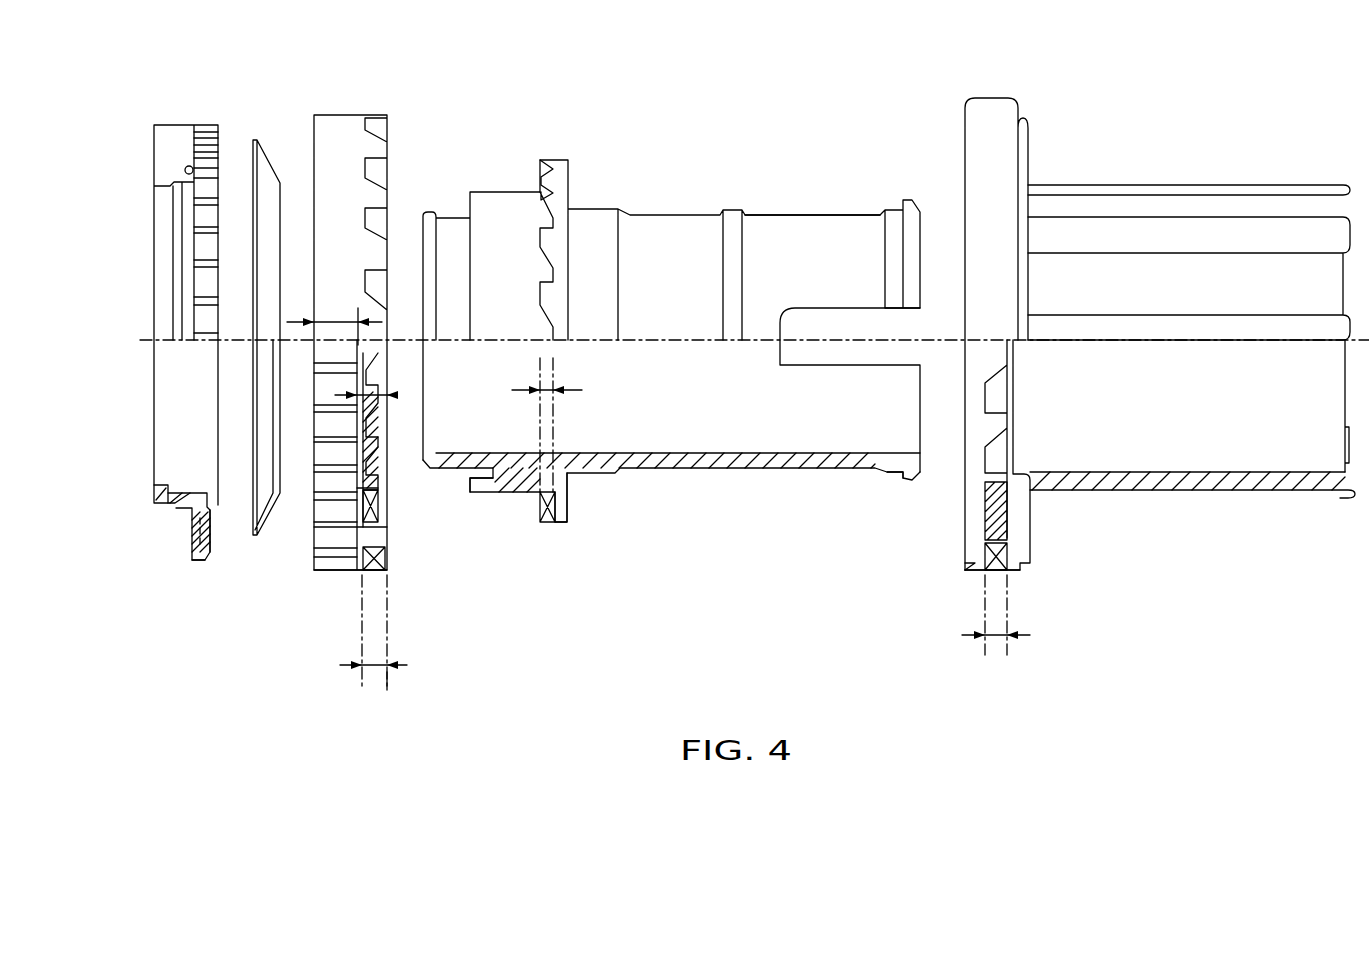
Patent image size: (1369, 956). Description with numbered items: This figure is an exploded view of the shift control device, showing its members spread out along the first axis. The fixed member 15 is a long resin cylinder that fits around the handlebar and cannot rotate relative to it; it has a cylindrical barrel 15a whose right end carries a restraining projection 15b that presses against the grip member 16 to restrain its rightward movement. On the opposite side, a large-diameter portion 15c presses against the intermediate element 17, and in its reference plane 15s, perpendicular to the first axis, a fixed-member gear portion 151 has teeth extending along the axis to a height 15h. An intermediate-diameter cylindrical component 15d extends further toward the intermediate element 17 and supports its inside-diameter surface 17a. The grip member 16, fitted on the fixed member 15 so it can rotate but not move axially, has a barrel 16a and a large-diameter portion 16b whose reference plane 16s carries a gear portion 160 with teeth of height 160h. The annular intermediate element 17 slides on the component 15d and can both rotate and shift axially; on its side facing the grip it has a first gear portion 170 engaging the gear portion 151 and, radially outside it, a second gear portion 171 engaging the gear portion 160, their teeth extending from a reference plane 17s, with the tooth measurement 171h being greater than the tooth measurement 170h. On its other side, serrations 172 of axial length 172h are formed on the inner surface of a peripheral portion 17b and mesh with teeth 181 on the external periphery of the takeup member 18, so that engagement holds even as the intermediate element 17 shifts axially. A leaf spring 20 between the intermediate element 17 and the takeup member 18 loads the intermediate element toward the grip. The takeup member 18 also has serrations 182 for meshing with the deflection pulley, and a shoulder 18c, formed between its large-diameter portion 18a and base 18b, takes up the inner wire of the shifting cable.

The takeup member 18 is at (178, 132).
The large-diameter portion 18a is at (218, 545).
The base 18b is at (165, 484).
The shoulder 18c is at (186, 512).
The teeth 181 is at (200, 560).
The serrations 182 is at (192, 540).
The leaf spring 20 is at (262, 150).
The intermediate element 17 is at (349, 114).
The inside-diameter surface 17a is at (352, 488).
The peripheral portion 17b is at (345, 572).
The reference plane 17s is at (340, 665).
The first gear portion 170 is at (378, 506).
The tooth measurement 170h is at (382, 378).
The second gear portion 171 is at (385, 560).
The tooth measurement 171h is at (388, 672).
The serrations 172 is at (352, 490).
The length of serrations 172h is at (338, 318).
The fixed member 15 is at (697, 213).
The cylindrical barrel 15a is at (768, 230).
The restraining projection 15b is at (902, 198).
The large-diameter portion 15c is at (566, 525).
The intermediate-diameter cylindrical component 15d is at (488, 492).
The height of gear teeth 15h is at (556, 388).
The reference plane 15s is at (558, 410).
The fixed-member gear portion 151 is at (546, 262).
The grip member 16 is at (1225, 188).
The barrel 16a is at (1200, 493).
The large-diameter portion 16b is at (975, 578).
The reference plane 16s is at (1012, 618).
The gear portion 160 is at (990, 558).
The height of gear teeth 160h is at (993, 645).